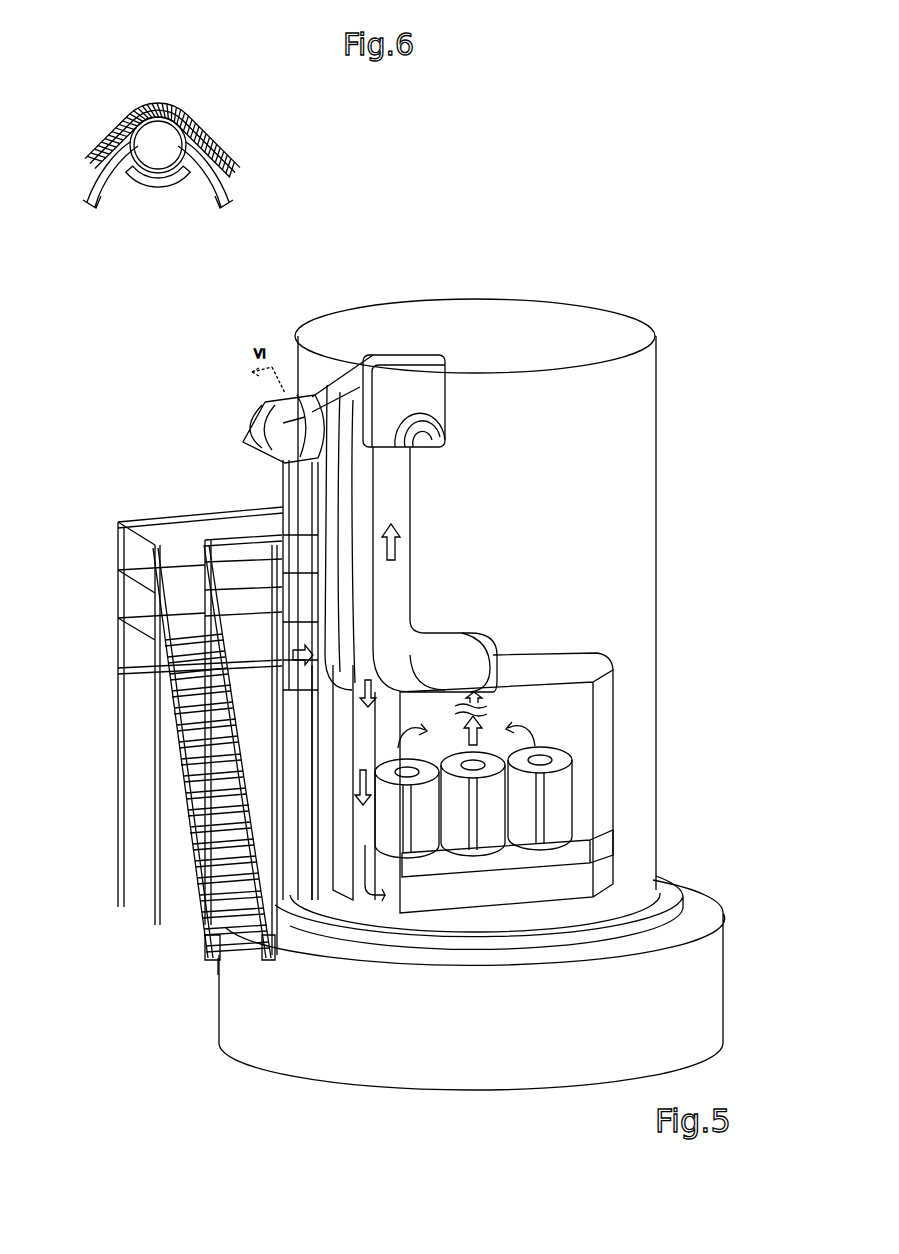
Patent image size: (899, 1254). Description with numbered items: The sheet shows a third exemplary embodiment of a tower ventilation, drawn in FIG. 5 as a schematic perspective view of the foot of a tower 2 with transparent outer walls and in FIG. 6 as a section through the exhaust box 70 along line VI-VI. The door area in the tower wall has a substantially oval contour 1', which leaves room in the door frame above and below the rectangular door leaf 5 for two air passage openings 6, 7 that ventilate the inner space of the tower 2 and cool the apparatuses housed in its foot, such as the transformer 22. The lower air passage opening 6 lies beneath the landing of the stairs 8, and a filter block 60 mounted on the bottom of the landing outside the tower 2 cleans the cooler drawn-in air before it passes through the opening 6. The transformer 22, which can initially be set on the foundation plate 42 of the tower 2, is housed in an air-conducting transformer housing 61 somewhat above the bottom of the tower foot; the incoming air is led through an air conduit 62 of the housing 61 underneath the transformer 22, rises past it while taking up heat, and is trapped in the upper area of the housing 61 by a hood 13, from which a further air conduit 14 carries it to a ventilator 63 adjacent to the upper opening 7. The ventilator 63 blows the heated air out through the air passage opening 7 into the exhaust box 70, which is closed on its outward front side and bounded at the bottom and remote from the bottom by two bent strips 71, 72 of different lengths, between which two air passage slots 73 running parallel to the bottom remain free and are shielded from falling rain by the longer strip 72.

In FIG. 5, the oval contour 1' is at (385, 328).
In FIG. 5, the tower 2 is at (590, 437).
In FIG. 5, the door leaf 5 is at (250, 505).
In FIG. 5, the air passage opening 6 is at (171, 702).
In FIG. 6, the air passage opening 7 is at (170, 134).
In FIG. 5, the air passage opening 7 is at (333, 390).
In FIG. 5, the stairs 8 is at (184, 791).
In FIG. 5, the hood 13 is at (540, 665).
In FIG. 5, the further air conduit 14 is at (400, 590).
In FIG. 5, the transformer 22 is at (565, 810).
In FIG. 5, the foundation plate 42 is at (600, 917).
In FIG. 5, the filter block 60 is at (136, 654).
In FIG. 5, the transformer housing 61 is at (605, 720).
In FIG. 5, the air conduit 62 is at (370, 750).
In FIG. 5, the ventilator 63 is at (407, 375).
In FIG. 6, the exhaust box 70 is at (125, 105).
In FIG. 5, the exhaust box 70 is at (250, 435).
In FIG. 6, the bent strip 71 is at (138, 190).
In FIG. 6, the bent strip 72 is at (215, 148).
In FIG. 6, the air passage slots 73 is at (128, 172).